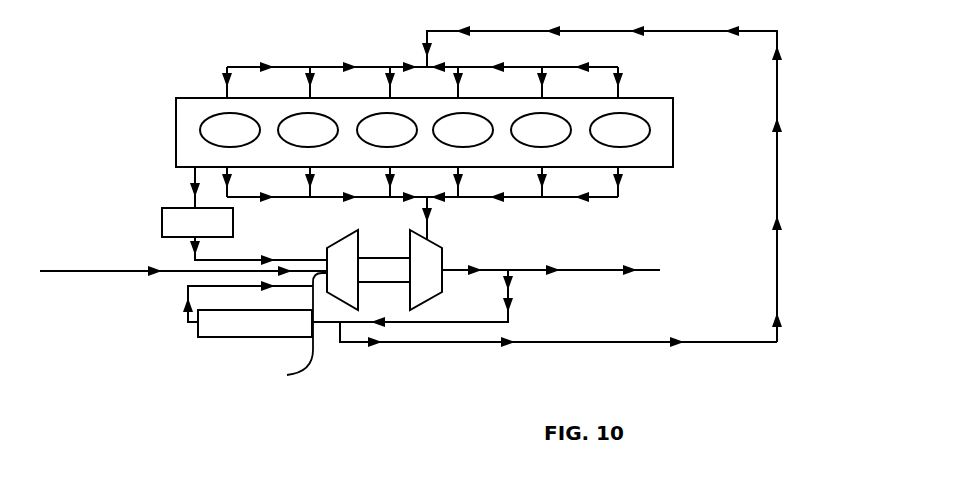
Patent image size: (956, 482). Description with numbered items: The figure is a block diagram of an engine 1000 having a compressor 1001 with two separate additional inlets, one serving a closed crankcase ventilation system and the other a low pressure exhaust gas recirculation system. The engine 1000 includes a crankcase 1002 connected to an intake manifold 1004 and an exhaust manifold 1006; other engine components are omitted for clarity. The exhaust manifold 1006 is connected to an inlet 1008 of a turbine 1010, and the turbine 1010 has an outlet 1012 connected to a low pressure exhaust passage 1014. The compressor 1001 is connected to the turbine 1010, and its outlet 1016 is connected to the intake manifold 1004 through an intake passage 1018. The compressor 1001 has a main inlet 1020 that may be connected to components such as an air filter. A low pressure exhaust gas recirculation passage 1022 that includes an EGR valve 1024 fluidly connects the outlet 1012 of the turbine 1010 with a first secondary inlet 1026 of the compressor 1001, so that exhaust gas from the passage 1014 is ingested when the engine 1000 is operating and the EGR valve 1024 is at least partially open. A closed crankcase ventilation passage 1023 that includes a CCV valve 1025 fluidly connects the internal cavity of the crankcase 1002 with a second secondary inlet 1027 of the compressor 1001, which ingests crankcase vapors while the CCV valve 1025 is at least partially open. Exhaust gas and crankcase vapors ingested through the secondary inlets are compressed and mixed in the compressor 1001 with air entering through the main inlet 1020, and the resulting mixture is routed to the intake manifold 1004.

The engine 1000 is at (148, 396).
The compressor 1001 is at (348, 290).
The crankcase 1002 is at (176, 122).
The intake manifold 1004 is at (340, 63).
The exhaust manifold 1006 is at (302, 200).
The inlet 1008 is at (432, 236).
The turbine 1010 is at (430, 298).
The outlet 1012 is at (447, 265).
The low pressure exhaust passage 1014 is at (603, 266).
The outlet 1016 is at (338, 298).
The intake passage 1018 is at (780, 248).
The main inlet 1020 is at (276, 332).
The low pressure exhaust gas recirculation passage 1022 is at (460, 322).
The closed crankcase ventilation passage 1023 is at (193, 197).
The EGR valve 1024 is at (222, 337).
The CCV valve 1025 is at (162, 218).
The first secondary inlet 1026 is at (326, 280).
The second secondary inlet 1027 is at (327, 254).